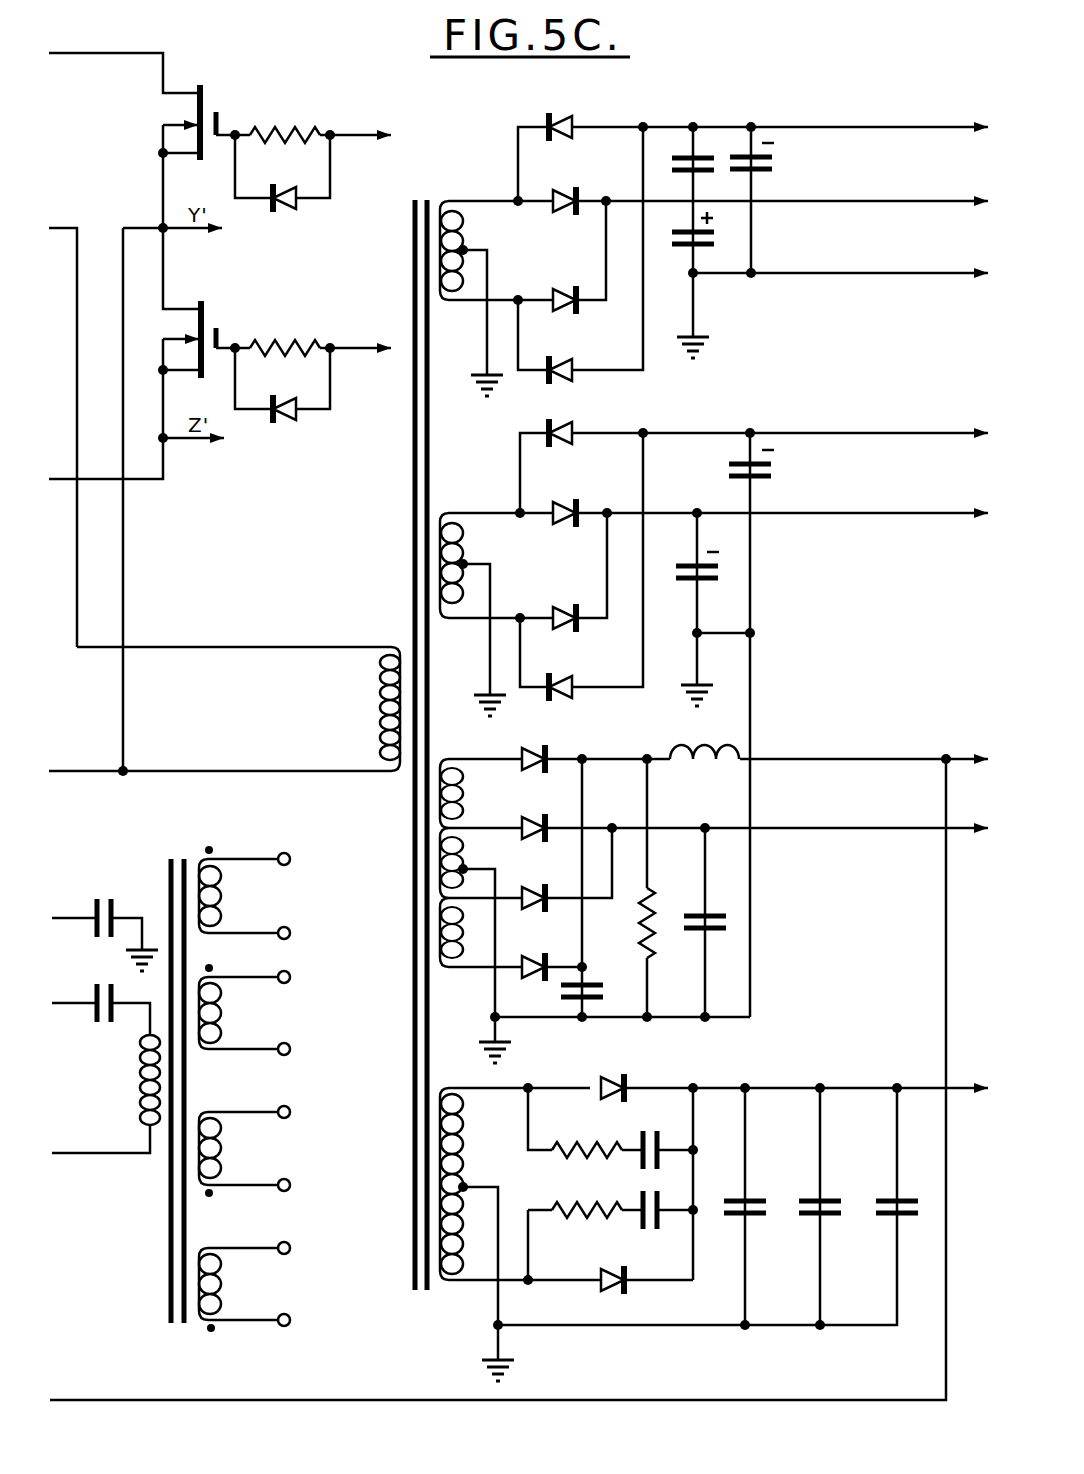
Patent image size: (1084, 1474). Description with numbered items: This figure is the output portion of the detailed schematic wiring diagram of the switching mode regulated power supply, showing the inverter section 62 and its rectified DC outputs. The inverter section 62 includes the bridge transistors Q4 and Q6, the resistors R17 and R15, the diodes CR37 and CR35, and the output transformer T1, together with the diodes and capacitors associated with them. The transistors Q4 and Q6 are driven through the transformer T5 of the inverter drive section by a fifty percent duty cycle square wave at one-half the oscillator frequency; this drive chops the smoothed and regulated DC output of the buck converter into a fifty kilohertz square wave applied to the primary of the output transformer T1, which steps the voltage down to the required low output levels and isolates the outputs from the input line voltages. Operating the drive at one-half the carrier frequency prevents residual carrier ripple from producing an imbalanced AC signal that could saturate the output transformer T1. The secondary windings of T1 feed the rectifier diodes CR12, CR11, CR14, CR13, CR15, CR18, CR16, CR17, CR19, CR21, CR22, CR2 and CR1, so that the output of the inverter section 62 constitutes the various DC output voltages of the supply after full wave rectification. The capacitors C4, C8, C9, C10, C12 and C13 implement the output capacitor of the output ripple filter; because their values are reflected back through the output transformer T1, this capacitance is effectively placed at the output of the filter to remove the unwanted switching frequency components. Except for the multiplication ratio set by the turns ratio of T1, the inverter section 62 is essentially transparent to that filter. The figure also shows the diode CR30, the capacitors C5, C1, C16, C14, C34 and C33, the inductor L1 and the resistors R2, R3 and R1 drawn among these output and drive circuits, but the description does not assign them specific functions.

The inverter section 62 is at (186, 52).
The inverter bridge transistor Q4 is at (175, 122).
The inverter bridge transistor Q6 is at (182, 339).
The resistor R17 is at (310, 120).
The resistor R15 is at (310, 333).
The diode CR37 is at (282, 193).
The diode CR35 is at (282, 405).
The output transformer T1 is at (288, 731).
The drive transformer T5 is at (188, 1077).
The rectifier diode CR12 is at (553, 112).
The rectifier diode CR11 is at (568, 188).
The rectifier diode CR14 is at (568, 287).
The rectifier diode CR13 is at (568, 357).
The rectifier diode CR15 is at (568, 420).
The rectifier diode CR18 is at (568, 499).
The rectifier diode CR16 is at (568, 603).
The rectifier diode CR17 is at (568, 674).
The rectifier diode CR19 is at (536, 747).
The rectifier diode CR21 is at (536, 816).
The rectifier diode CR22 is at (538, 885).
The rectifier diode CR30 is at (538, 955).
The rectifier diode CR2 is at (608, 1075).
The rectifier diode CR1 is at (614, 1297).
The filter capacitor C5 is at (683, 181).
The output filter capacitor C10 is at (680, 244).
The filter capacitor C1 is at (771, 200).
The output filter capacitor C9 is at (770, 725).
The output filter capacitor C8 is at (713, 609).
The filter inductor L1 is at (704, 740).
The resistor R2 is at (629, 888).
The output filter capacitor C12 is at (693, 922).
The output filter capacitor C13 is at (600, 978).
The resistor R3 is at (587, 1140).
The capacitor C16 is at (659, 1138).
The resistor R1 is at (587, 1228).
The output filter capacitor C4 is at (753, 1206).
The filter capacitor C14 is at (909, 1193).
The capacitor C34 is at (105, 922).
The capacitor C33 is at (90, 1020).